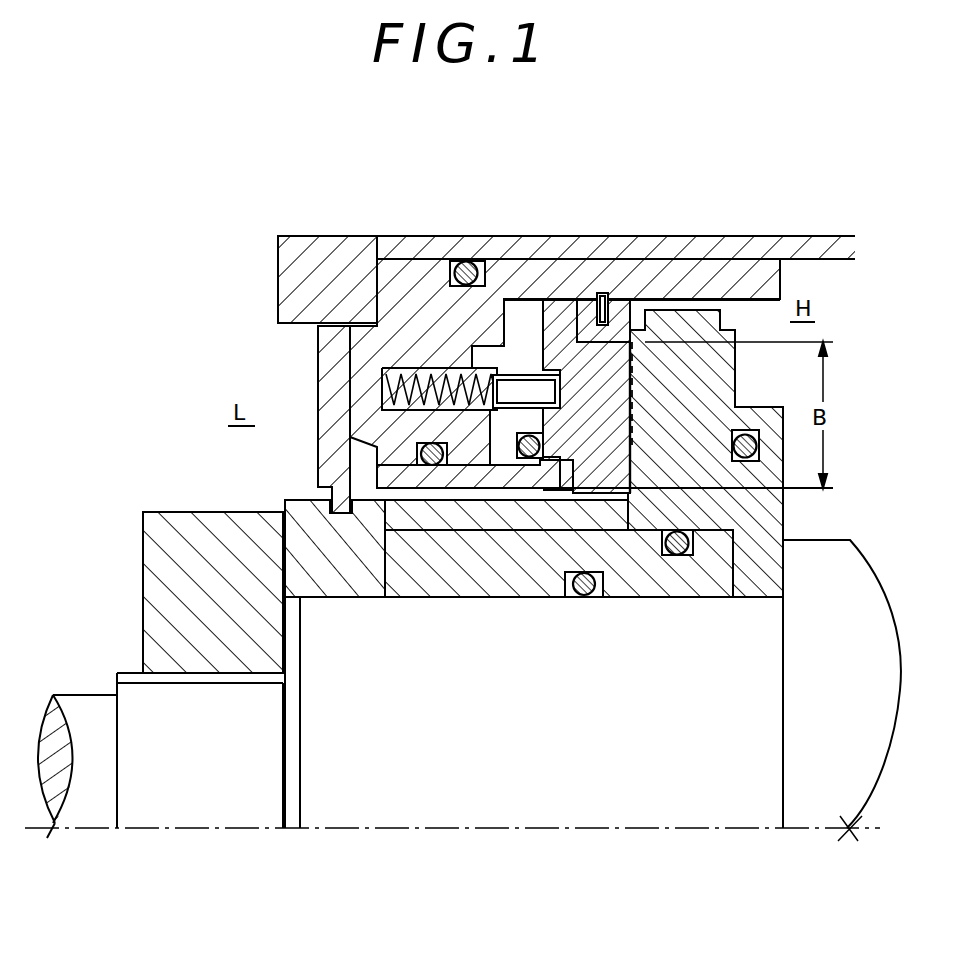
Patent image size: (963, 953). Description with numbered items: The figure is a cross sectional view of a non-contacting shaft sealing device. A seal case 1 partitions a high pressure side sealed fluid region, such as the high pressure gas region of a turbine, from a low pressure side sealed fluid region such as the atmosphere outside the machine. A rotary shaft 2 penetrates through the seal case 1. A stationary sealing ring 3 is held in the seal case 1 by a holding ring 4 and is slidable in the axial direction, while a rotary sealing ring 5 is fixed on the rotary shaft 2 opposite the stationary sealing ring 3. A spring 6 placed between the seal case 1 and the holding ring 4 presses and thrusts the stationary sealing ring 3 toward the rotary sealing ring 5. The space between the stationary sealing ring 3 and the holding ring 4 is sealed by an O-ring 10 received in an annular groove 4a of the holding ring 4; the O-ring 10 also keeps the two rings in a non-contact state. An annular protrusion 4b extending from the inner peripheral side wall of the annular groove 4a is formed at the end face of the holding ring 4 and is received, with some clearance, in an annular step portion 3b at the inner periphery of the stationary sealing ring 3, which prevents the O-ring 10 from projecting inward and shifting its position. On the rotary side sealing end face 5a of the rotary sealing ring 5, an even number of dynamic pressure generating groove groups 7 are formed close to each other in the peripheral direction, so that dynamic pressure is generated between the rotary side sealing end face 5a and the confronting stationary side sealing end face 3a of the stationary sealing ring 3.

The seal case 1 is at (356, 362).
The rotary shaft 2 is at (836, 558).
The stationary sealing ring 3 is at (557, 330).
The stationary side sealing end face 3a is at (633, 365).
The annular step portion 3b is at (590, 476).
The holding ring 4 is at (515, 362).
The annular groove 4a is at (500, 440).
The annular protrusion 4b is at (527, 462).
The rotary sealing ring 5 is at (713, 512).
The rotary side sealing end face 5a is at (612, 345).
The spring 6 is at (420, 365).
The dynamic pressure generating groove groups 7 is at (638, 408).
The O-ring 10 is at (552, 410).